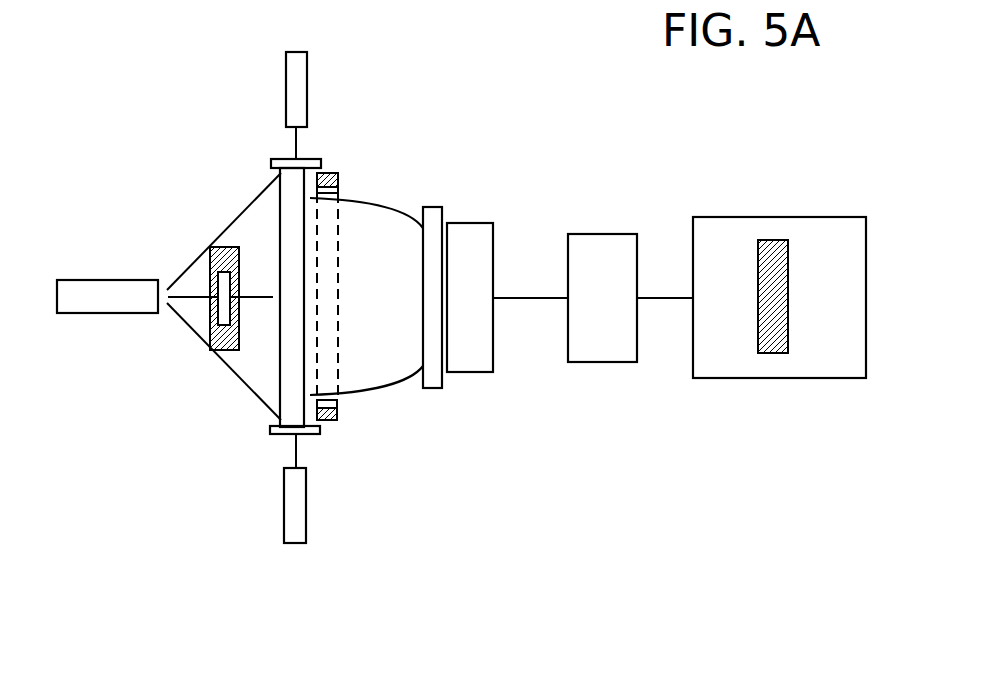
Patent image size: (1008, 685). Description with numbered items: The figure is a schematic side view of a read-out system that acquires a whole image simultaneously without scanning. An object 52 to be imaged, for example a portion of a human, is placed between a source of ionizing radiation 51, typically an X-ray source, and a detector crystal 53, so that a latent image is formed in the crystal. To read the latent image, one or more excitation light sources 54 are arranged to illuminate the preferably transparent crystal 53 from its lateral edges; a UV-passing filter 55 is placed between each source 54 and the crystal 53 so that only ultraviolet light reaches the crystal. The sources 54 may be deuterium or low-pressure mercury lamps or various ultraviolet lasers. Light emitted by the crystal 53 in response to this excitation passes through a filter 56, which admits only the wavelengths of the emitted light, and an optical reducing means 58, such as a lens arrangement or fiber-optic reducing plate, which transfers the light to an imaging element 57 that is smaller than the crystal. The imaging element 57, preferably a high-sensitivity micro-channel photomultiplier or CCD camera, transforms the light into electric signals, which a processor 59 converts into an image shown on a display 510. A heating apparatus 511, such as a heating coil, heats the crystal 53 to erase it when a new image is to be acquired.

The source of ionizing radiation 51 is at (74, 284).
The object 52 is at (221, 343).
The detector crystal 53 is at (290, 397).
The excitation light source 54 is at (303, 72).
The UV-passing filter 55 is at (322, 161).
The heating apparatus 511 is at (340, 183).
The optical reducing means 58 is at (388, 378).
The filter 56 is at (433, 213).
The imaging element 57 is at (487, 360).
The processor 59 is at (593, 243).
The display 510 is at (712, 223).